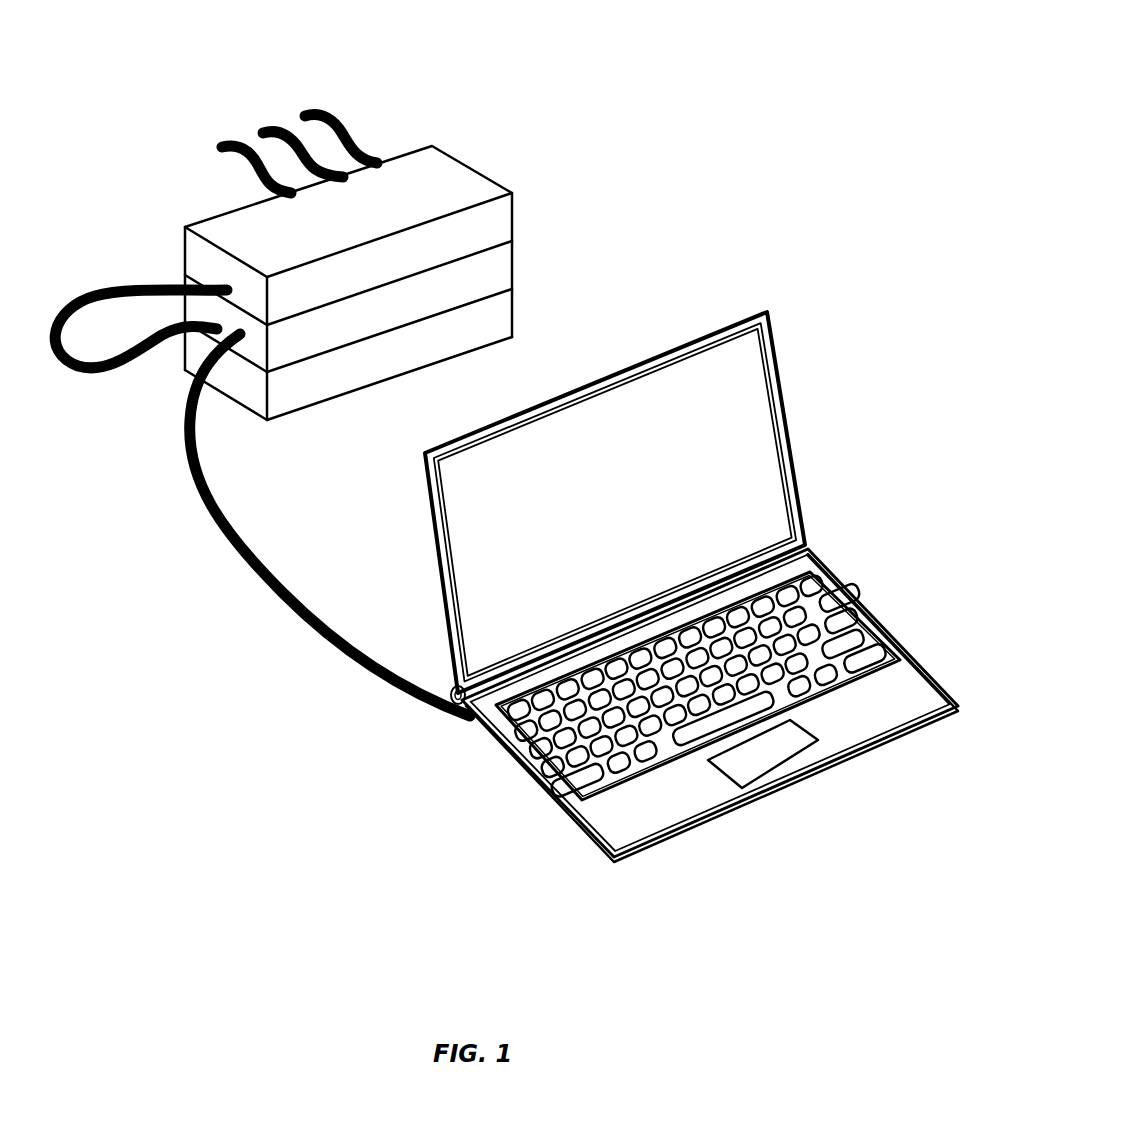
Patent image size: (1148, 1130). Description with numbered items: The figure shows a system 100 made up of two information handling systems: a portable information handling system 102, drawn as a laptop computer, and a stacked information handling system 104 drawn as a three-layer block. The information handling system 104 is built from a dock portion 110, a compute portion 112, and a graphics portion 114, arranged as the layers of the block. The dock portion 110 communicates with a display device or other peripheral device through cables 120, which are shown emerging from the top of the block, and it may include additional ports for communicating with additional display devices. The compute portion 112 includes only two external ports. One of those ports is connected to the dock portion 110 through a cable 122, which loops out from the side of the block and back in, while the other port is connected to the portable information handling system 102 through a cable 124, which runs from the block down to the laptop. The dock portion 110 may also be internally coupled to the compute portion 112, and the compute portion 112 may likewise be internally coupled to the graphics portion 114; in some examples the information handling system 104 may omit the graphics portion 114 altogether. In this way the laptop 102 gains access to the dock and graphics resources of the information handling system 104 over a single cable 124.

The system 100 is at (668, 50).
The portable information handling system 102 is at (656, 822).
The information handling system 104 is at (365, 256).
The dock portion 110 is at (230, 217).
The compute portion 112 is at (283, 340).
The graphics portion 114 is at (390, 353).
The cables 120 is at (230, 142).
The cable 122 is at (70, 370).
The cable 124 is at (277, 593).